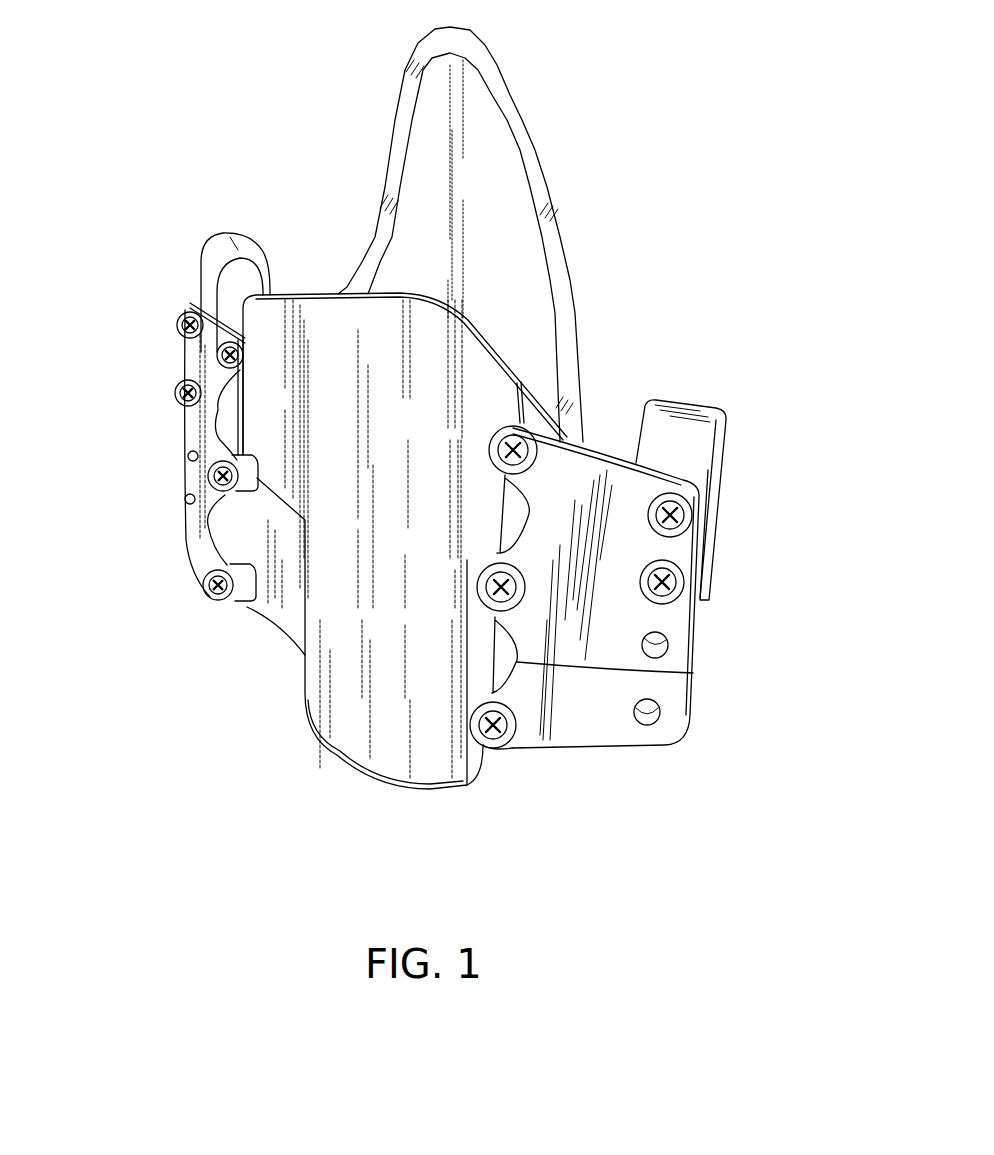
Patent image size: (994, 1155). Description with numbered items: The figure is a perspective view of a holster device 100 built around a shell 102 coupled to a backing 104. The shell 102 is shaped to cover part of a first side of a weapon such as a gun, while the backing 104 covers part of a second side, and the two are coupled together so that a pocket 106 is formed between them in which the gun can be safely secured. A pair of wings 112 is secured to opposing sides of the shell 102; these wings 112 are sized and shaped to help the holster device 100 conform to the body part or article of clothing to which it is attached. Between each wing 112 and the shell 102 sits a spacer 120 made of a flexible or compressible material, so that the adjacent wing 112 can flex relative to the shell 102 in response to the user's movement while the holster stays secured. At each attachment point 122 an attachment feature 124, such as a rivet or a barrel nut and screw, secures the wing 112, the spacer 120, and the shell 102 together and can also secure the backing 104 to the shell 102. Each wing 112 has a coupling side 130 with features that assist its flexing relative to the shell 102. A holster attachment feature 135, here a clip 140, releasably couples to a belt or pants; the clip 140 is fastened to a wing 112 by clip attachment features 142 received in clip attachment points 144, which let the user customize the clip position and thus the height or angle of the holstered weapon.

The holster device 100 is at (634, 63).
The shell 102 is at (490, 375).
The backing 104 is at (510, 212).
The pocket 106 is at (505, 310).
The wing 112 is at (195, 437).
The spacer 120 is at (240, 600).
The attachment point 122 is at (207, 612).
The attachment feature 124 is at (210, 597).
The coupling side 130 is at (220, 424).
The holster attachment feature 135 is at (467, 376).
The clip 140 is at (205, 234).
The clip attachment feature 142 is at (183, 320).
The clip attachment point 144 is at (188, 500).